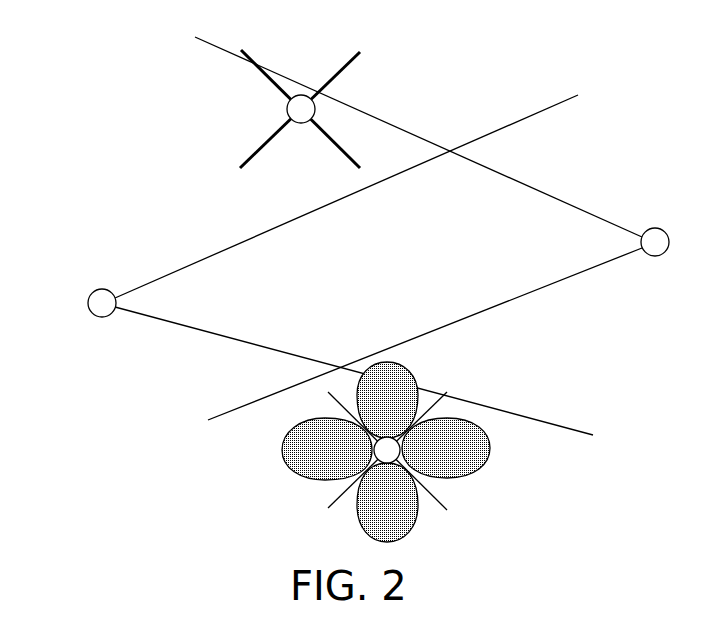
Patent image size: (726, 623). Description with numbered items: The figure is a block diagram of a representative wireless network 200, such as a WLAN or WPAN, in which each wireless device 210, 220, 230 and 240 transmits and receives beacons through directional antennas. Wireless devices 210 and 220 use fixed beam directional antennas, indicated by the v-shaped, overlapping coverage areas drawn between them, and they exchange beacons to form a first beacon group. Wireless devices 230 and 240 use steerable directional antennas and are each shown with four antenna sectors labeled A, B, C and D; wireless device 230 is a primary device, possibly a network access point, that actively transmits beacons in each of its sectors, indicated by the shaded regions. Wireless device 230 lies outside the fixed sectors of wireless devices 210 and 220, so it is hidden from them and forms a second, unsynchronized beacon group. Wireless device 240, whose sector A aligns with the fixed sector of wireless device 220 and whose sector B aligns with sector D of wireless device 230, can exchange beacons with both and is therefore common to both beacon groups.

The wireless network 200 is at (119, 124).
The wireless device 210 is at (88, 290).
The wireless device 220 is at (655, 257).
The wireless device 230 is at (476, 492).
The wireless device 240 is at (372, 91).